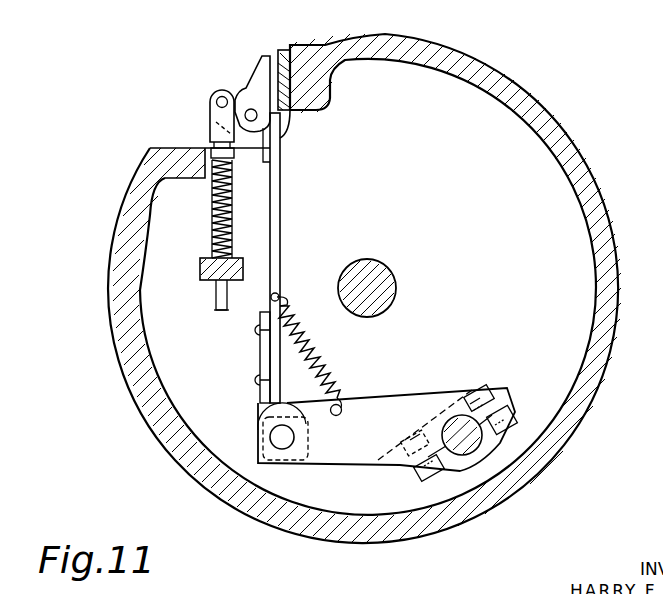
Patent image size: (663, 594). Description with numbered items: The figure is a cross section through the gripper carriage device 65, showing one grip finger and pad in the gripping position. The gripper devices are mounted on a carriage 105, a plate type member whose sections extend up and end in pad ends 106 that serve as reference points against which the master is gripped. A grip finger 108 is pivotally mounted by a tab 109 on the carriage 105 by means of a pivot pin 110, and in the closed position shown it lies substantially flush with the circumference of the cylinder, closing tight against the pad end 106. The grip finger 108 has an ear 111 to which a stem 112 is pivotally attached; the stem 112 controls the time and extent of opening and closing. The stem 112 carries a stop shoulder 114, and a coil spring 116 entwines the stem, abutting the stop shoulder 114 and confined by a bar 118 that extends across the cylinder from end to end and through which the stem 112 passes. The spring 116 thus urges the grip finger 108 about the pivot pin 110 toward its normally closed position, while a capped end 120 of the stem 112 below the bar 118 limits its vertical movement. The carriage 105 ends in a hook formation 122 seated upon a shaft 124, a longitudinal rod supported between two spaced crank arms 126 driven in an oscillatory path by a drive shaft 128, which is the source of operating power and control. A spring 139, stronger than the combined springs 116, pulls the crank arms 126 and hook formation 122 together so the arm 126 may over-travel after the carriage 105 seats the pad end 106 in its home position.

The carriage device 65 is at (213, 86).
The carriage 105 is at (281, 226).
The pad 106 is at (288, 46).
The grip finger 108 is at (281, 54).
The tab 109 is at (244, 100).
The pivot pin 110 is at (218, 96).
The ear 111 is at (209, 104).
The stem 112 is at (218, 229).
The stop shoulder 114 is at (228, 160).
The spring 116 is at (232, 200).
The bar 118 is at (200, 277).
The capped end 120 is at (216, 306).
The hook formation 122 is at (260, 410).
The shaft 124 is at (282, 445).
The crank arms 126 is at (396, 402).
The drive shaft 128 is at (461, 414).
The spring 139 is at (316, 357).